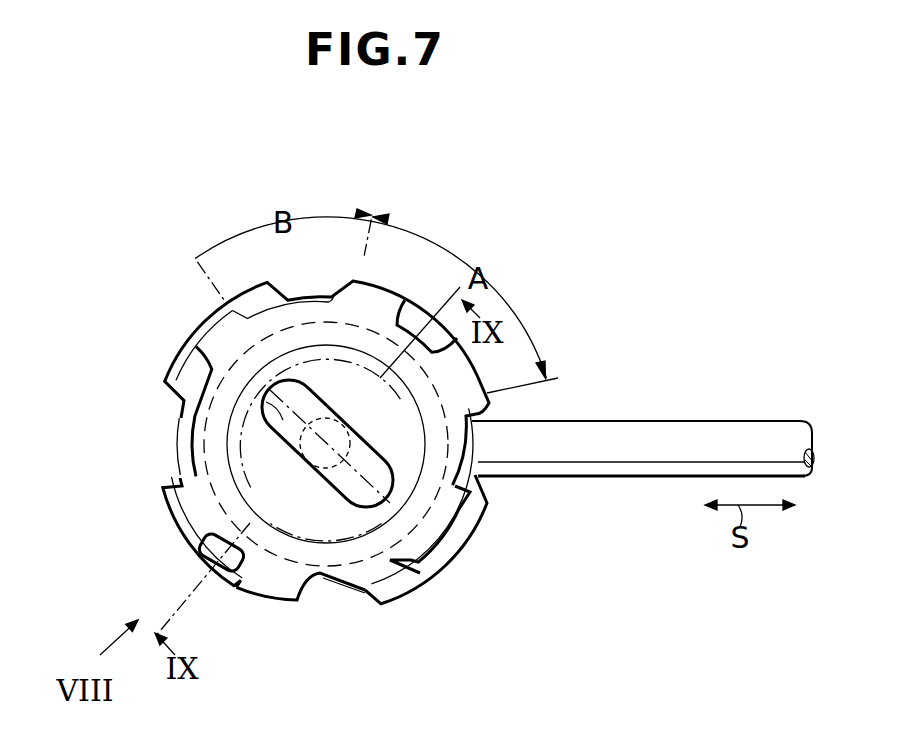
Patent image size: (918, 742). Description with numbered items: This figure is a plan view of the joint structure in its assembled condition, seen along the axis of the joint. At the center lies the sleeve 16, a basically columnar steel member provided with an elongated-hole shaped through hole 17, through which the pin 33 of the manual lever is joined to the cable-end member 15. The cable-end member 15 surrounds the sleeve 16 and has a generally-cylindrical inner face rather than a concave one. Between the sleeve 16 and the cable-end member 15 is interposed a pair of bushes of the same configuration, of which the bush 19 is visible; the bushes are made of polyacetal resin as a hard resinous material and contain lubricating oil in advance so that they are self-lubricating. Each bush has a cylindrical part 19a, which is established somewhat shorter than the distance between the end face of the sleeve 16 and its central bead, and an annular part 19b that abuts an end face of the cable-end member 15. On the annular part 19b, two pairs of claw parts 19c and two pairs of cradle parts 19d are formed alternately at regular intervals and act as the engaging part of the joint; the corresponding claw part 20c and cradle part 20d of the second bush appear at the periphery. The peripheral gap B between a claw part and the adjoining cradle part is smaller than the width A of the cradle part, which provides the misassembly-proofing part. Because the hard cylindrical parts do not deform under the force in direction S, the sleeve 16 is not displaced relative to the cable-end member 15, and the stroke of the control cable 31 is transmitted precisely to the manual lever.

The cable-end member 15 is at (175, 433).
The sleeve 16 is at (293, 518).
The through hole 17 is at (266, 414).
The bush 19 is at (163, 492).
The cylindrical part 19a is at (205, 562).
The annular part 19b is at (366, 598).
The claw part 19c is at (458, 553).
The cradle part 19d is at (176, 520).
The claw part 20c is at (240, 572).
The cradle part 20d is at (492, 513).
The control cable 31 is at (746, 428).
The pin 33 is at (338, 545).